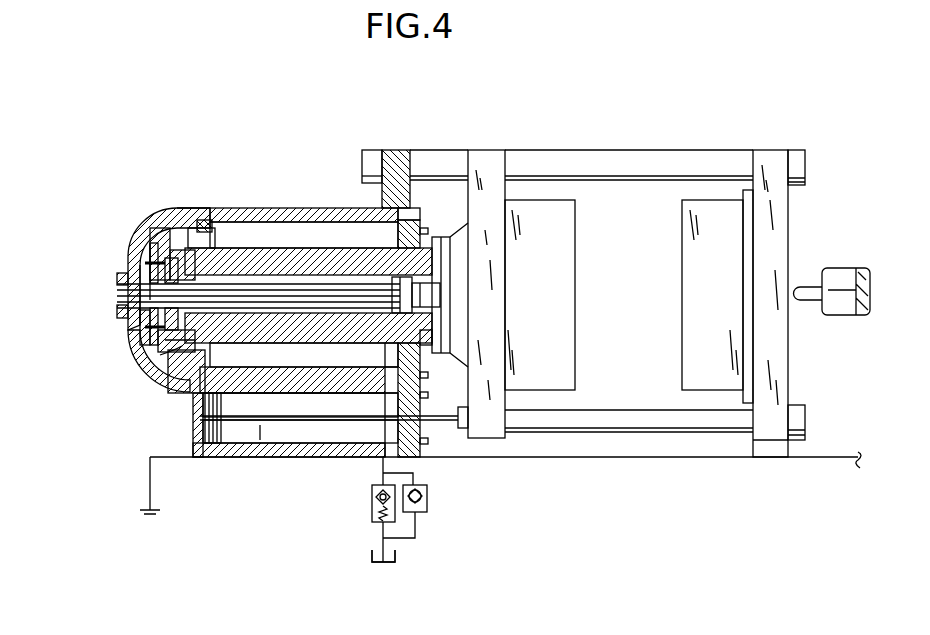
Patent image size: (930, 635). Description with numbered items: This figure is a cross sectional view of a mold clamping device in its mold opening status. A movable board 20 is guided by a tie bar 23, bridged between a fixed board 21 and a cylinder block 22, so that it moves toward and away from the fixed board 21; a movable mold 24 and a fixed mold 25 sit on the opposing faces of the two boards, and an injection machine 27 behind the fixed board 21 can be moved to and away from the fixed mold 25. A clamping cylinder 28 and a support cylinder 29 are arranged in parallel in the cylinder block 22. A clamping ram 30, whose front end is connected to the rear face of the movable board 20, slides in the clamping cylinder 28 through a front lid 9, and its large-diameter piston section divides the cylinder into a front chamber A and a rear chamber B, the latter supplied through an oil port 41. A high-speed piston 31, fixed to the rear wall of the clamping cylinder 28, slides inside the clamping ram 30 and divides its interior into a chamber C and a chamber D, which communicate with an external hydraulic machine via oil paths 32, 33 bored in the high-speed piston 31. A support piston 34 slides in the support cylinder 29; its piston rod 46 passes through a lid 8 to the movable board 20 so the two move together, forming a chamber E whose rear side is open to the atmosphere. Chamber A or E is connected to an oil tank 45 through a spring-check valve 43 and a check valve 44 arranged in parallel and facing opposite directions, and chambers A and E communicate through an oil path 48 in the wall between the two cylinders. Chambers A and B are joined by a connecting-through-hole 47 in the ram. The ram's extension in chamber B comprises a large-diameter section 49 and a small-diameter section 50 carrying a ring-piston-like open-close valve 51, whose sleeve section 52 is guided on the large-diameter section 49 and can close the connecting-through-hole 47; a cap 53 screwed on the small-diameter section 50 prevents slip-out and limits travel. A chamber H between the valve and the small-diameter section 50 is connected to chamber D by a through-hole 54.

The lid 8 is at (418, 434).
The front lid 9 is at (433, 275).
The movable board 20 is at (497, 163).
The fixed board 21 is at (775, 160).
The cylinder block 22 is at (170, 202).
The tie bar 23 is at (657, 150).
The movable mold 24 is at (562, 263).
The fixed mold 25 is at (686, 320).
The injection machine 27 is at (842, 275).
The clamping cylinder 28 is at (333, 210).
The support cylinder 29 is at (297, 452).
The clamping ram 30 is at (310, 252).
The high-speed piston 31 is at (283, 287).
The oil path 32 is at (120, 300).
The oil path 33 is at (118, 288).
The support piston 34 is at (208, 447).
The oil port 41 is at (130, 333).
The spring-check valve 43 is at (372, 506).
The check valve 44 is at (427, 508).
The oil tank 45 is at (400, 555).
The piston rod 46 is at (248, 436).
The connecting-through-hole 47 is at (207, 225).
The oil path 48 is at (392, 388).
The large-diameter section 49 is at (190, 393).
The small-diameter section 50 is at (158, 350).
The open-close valve 51 is at (148, 228).
The sleeve section 52 is at (155, 232).
The cap 53 is at (150, 265).
The through-hole 54 is at (128, 327).
The front chamber A is at (360, 230).
The rear chamber B is at (148, 240).
The chamber C is at (392, 350).
The chamber D is at (304, 355).
The chamber E is at (270, 436).
The chamber H is at (218, 235).